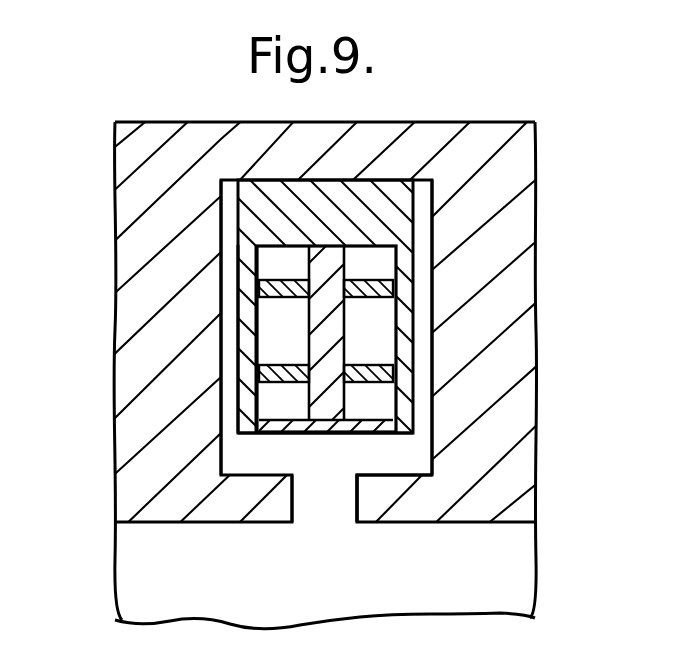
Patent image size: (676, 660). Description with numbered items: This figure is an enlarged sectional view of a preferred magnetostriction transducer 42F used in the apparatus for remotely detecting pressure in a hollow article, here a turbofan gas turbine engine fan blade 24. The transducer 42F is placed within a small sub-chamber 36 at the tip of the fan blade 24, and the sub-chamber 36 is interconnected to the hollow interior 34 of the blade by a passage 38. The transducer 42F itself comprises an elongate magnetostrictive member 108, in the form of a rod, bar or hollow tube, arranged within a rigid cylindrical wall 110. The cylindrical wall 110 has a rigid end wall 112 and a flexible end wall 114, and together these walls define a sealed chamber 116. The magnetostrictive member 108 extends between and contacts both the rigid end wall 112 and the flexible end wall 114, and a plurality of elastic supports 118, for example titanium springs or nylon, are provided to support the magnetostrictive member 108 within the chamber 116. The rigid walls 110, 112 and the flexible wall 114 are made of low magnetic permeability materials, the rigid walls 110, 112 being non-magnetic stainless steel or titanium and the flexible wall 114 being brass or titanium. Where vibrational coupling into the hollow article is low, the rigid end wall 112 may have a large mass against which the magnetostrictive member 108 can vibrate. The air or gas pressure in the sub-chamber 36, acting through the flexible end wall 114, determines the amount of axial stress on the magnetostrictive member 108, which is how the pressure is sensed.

The fan blade 24 is at (497, 308).
The hollow interior 34 is at (517, 560).
The sub-chamber 36 is at (408, 452).
The passage 38 is at (323, 508).
The magnetostriction transducer 42F is at (420, 178).
The magnetostrictive member 108 is at (342, 341).
The rigid cylindrical wall 110 is at (247, 308).
The rigid end wall 112 is at (298, 216).
The flexible end wall 114 is at (267, 437).
The sealed chamber 116 is at (378, 400).
The elastic supports 118 is at (378, 366).